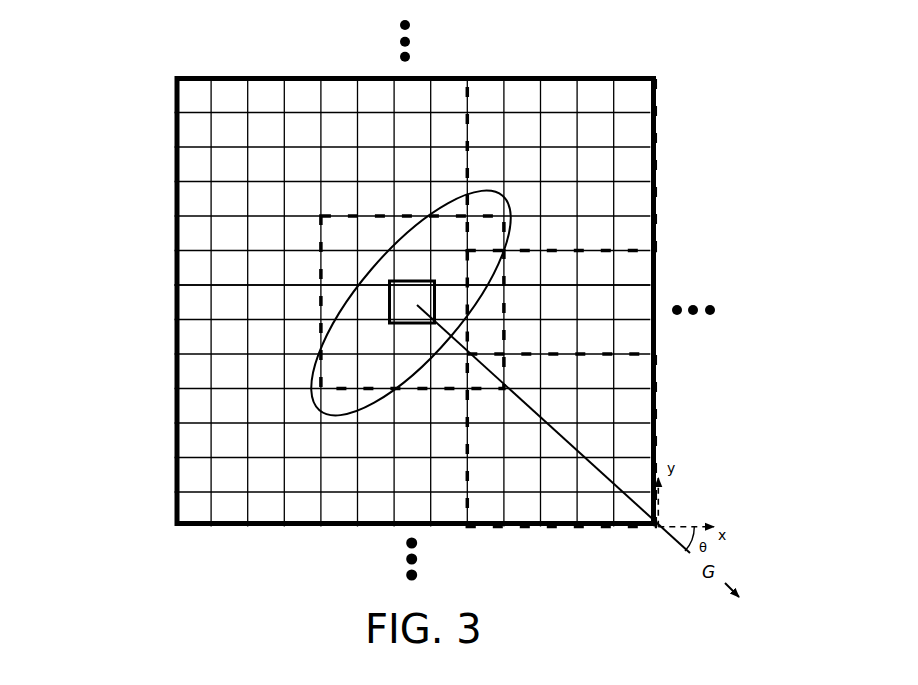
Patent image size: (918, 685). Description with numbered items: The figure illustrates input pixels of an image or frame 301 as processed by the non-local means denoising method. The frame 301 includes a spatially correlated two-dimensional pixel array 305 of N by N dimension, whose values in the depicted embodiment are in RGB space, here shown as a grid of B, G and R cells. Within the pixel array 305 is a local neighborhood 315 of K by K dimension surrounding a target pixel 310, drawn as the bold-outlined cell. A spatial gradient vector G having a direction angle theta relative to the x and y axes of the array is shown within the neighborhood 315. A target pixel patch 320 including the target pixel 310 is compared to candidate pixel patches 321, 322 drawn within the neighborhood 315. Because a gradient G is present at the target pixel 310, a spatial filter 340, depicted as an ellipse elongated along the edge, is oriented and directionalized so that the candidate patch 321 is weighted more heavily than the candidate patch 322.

The image or frame 301 is at (133, 120).
The pixel array 305 is at (613, 60).
The target pixel 310 is at (403, 295).
The local neighborhood 315 is at (176, 300).
The target pixel patch 320 is at (320, 240).
The candidate pixel patch 321 is at (467, 125).
The candidate pixel patch 322 is at (467, 452).
The spatial filter 340 is at (503, 202).